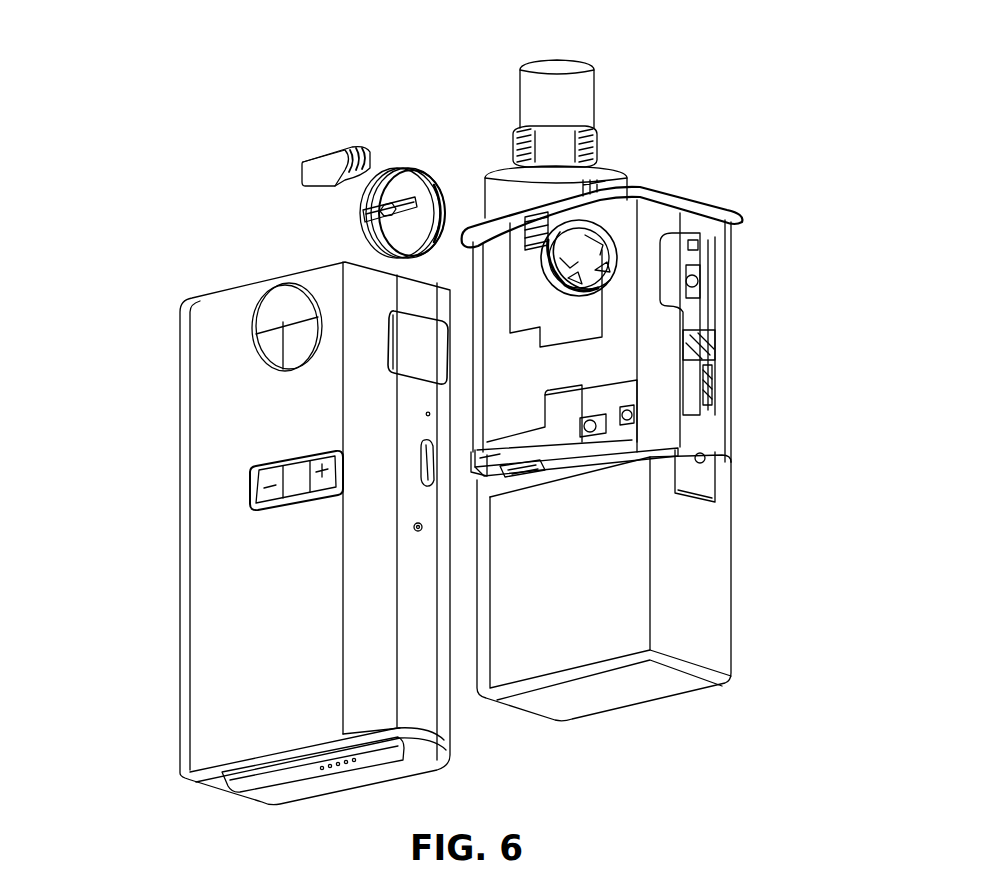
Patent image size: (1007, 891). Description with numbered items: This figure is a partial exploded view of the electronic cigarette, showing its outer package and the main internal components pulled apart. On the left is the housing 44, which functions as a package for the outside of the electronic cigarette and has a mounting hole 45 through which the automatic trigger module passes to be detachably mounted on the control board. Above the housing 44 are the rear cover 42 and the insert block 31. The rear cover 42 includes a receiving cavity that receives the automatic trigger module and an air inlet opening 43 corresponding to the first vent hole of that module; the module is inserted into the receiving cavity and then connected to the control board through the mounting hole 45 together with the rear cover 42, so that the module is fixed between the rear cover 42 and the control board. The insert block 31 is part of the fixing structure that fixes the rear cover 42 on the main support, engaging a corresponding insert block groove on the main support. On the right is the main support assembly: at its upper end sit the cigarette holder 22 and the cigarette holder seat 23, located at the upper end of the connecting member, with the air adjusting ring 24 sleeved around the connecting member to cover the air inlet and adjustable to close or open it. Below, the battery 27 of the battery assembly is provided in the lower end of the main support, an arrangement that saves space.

The cigarette holder 22 is at (553, 100).
The cigarette holder seat 23 is at (597, 133).
The air adjusting ring 24 is at (553, 185).
The battery 27 is at (593, 607).
The insert block 31 is at (320, 155).
The rear cover 42 is at (398, 183).
The air inlet opening 43 is at (362, 208).
The housing 44 is at (263, 717).
The mounting hole 45 is at (277, 312).